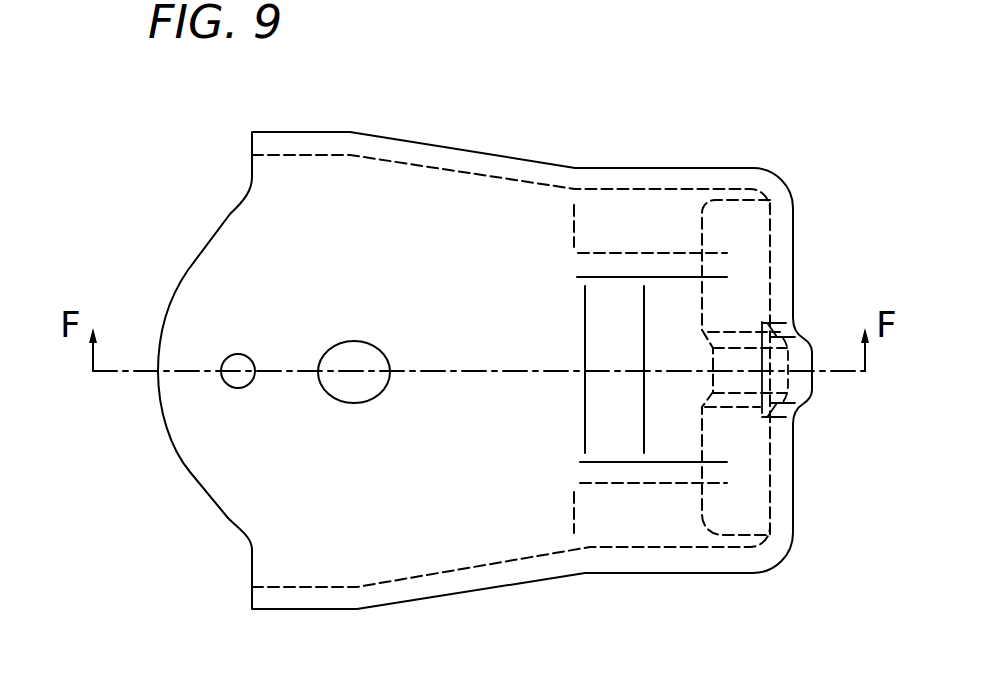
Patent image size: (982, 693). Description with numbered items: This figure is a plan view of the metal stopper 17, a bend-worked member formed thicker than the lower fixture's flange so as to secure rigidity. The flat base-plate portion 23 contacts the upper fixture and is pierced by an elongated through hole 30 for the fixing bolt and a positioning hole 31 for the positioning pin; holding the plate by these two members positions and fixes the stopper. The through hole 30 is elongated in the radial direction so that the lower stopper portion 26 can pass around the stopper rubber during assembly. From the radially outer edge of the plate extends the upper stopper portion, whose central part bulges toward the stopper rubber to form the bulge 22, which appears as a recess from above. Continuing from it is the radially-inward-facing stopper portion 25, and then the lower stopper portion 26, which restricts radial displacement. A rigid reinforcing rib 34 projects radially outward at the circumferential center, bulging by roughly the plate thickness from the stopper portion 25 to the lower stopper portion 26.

The metal stopper 17 is at (622, 140).
The bulge 22 is at (672, 305).
The flat base-plate portion 23 is at (442, 205).
The radially-inward-facing stopper portion 25 is at (794, 263).
The lower stopper portion 26 is at (735, 201).
The elongated through hole 30 is at (357, 352).
The positioning hole 31 is at (241, 366).
The reinforcing rib 34 is at (808, 342).